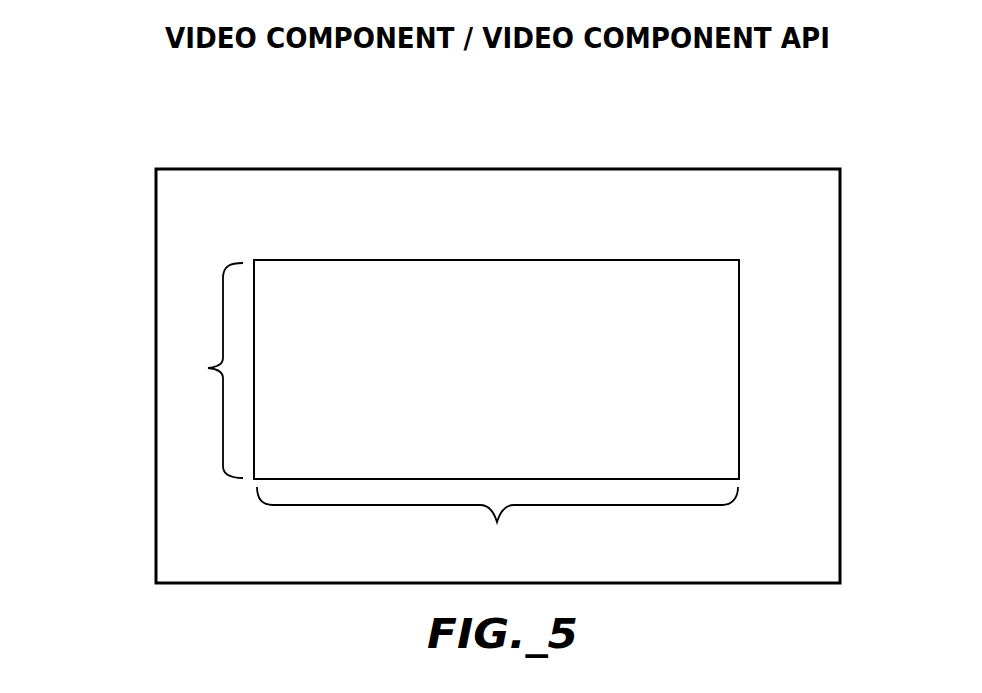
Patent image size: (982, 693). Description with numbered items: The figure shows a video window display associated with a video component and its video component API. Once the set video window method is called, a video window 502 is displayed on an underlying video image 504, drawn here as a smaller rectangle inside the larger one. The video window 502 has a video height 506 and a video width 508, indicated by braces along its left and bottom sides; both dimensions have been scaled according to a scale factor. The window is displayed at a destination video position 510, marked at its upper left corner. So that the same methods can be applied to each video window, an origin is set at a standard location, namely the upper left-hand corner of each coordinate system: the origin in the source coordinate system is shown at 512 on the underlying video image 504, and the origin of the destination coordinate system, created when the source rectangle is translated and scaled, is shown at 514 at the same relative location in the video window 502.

The video window 502 is at (496, 369).
The underlying video image 504 is at (747, 167).
The video height 506 is at (208, 368).
The video width 508 is at (497, 532).
The destination video position 510 is at (254, 262).
The origin in the source coordinate system 512 is at (177, 135).
The origin in the destination coordinate system 514 is at (290, 227).